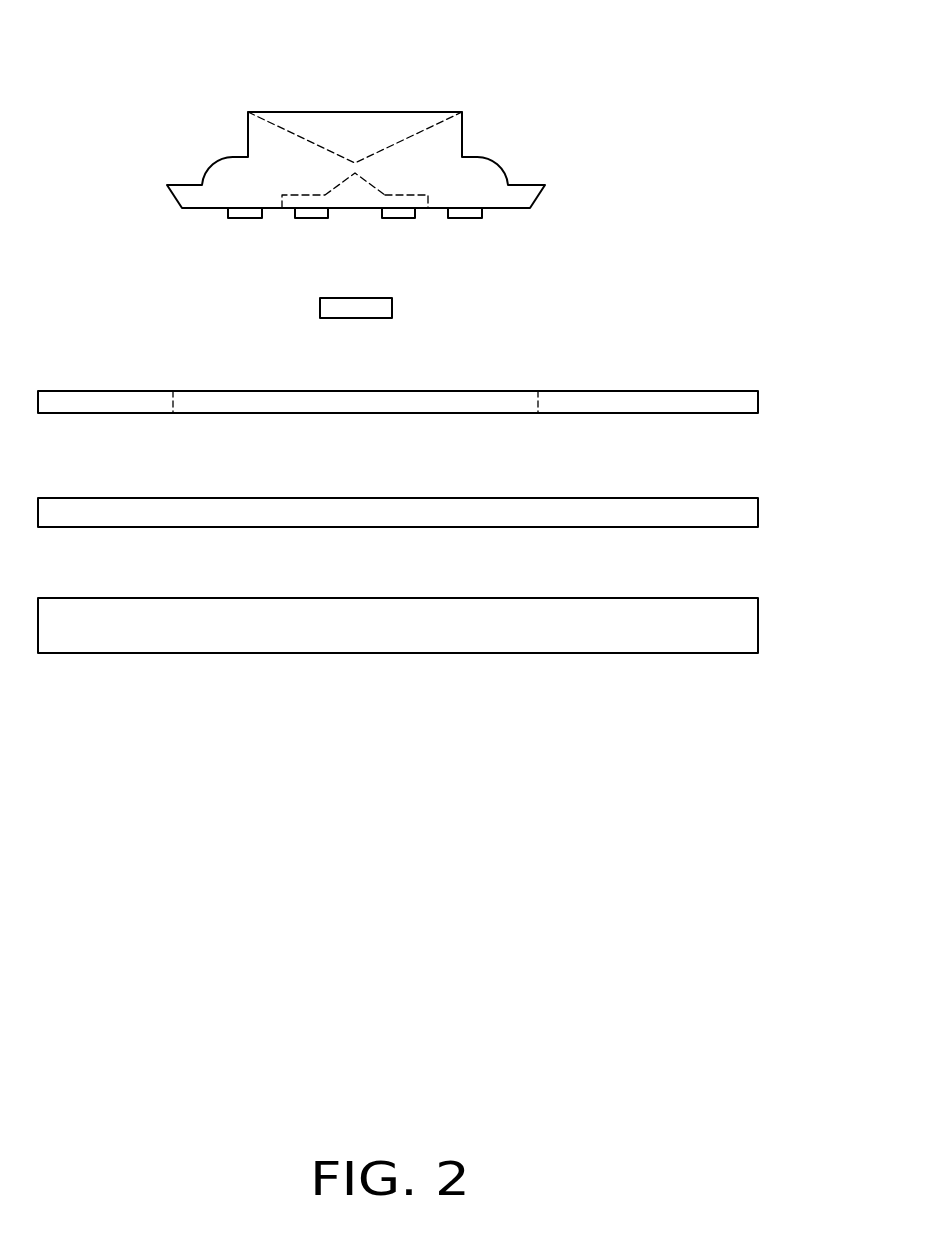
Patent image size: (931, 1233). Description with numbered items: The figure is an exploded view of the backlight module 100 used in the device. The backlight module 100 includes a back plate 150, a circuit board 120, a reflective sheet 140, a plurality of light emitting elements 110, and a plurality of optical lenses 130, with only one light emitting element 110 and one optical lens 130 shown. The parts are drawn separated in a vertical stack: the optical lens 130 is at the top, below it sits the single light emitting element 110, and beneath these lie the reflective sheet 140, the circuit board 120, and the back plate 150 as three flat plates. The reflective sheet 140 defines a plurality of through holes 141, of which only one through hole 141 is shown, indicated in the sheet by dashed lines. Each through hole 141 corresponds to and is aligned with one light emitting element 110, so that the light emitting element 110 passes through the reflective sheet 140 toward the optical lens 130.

The backlight module 100 is at (215, 56).
The light emitting element 110 is at (375, 307).
The circuit board 120 is at (725, 513).
The optical lens 130 is at (478, 168).
The reflective sheet 140 is at (435, 377).
The through hole 141 is at (442, 396).
The back plate 150 is at (728, 622).